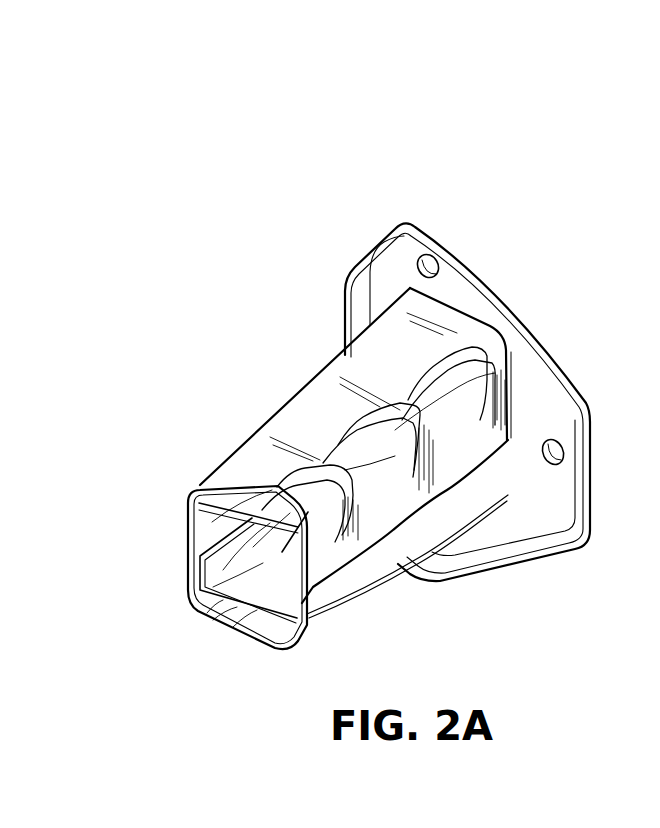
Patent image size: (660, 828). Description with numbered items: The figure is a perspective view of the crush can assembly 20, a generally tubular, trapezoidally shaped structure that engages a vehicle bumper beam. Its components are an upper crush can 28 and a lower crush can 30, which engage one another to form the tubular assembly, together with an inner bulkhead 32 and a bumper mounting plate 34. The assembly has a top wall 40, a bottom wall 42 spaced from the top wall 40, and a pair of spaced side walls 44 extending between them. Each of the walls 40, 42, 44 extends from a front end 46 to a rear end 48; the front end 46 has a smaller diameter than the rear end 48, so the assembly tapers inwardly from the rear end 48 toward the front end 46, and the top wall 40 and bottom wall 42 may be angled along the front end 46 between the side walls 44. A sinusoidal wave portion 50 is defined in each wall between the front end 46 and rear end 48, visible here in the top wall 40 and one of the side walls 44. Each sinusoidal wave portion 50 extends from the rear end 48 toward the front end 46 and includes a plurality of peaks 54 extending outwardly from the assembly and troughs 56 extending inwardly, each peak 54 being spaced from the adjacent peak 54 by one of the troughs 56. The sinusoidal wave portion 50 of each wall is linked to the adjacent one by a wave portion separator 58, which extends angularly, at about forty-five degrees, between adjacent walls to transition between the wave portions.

The crush can assembly 20 is at (190, 356).
The upper crush can 28 is at (304, 392).
The lower crush can 30 is at (330, 618).
The inner bulkhead 32 is at (243, 486).
The bumper mounting plate 34 is at (527, 370).
The top wall 40 is at (337, 357).
The bottom wall 42 is at (240, 640).
The side walls 44 is at (187, 522).
The front end 46 is at (226, 505).
The rear end 48 is at (458, 306).
The sinusoidal wave portion 50 is at (372, 432).
The peak 54 is at (297, 468).
The trough 56 is at (352, 497).
The wave portion separator 58 is at (191, 492).